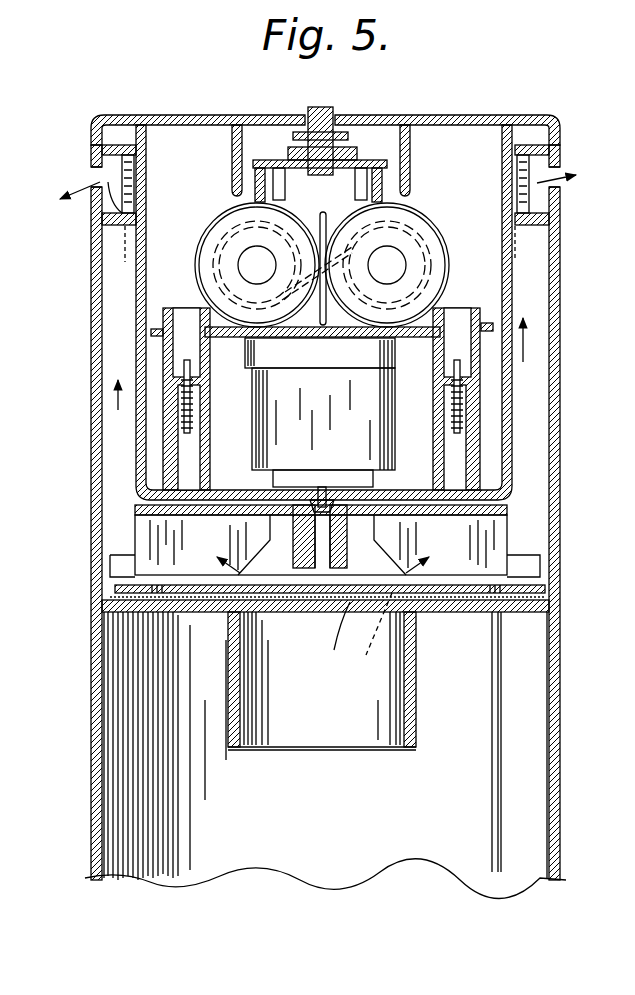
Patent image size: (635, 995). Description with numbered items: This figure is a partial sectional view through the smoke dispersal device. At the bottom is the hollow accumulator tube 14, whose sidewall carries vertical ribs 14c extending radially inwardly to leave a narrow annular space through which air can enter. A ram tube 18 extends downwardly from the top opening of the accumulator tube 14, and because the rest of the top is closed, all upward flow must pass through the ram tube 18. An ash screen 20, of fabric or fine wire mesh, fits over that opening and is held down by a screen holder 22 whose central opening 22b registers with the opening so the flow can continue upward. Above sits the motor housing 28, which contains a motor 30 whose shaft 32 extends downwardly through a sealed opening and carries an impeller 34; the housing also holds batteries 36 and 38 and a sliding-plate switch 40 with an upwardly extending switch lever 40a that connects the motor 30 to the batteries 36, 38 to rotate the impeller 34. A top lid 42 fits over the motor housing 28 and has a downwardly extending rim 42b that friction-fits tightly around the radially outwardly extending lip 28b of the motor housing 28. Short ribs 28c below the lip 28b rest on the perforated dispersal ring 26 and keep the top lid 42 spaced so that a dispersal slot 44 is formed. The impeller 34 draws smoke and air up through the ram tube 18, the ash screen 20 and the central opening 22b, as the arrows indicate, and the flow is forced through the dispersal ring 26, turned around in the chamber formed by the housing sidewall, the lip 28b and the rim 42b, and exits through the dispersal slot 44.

The accumulator tube 14 is at (561, 760).
The vertical ribs 14c is at (150, 828).
The ram tube 18 is at (410, 713).
The ash screen 20 is at (455, 606).
The screen holder 22 is at (530, 583).
The central opening 22b is at (334, 650).
The dispersal ring 26 is at (100, 250).
The motor housing 28 is at (515, 385).
The lip 28b is at (530, 148).
The short ribs 28c is at (100, 168).
The motor 30 is at (382, 397).
The shaft 32 is at (302, 572).
The impeller 34 is at (520, 533).
The battery 36 is at (471, 216).
The battery 38 is at (212, 238).
The sliding-plate switch 40 is at (366, 139).
The switch lever 40a is at (317, 106).
The top lid 42 is at (473, 114).
The rim 42b is at (547, 159).
The dispersal slot 44 is at (133, 318).